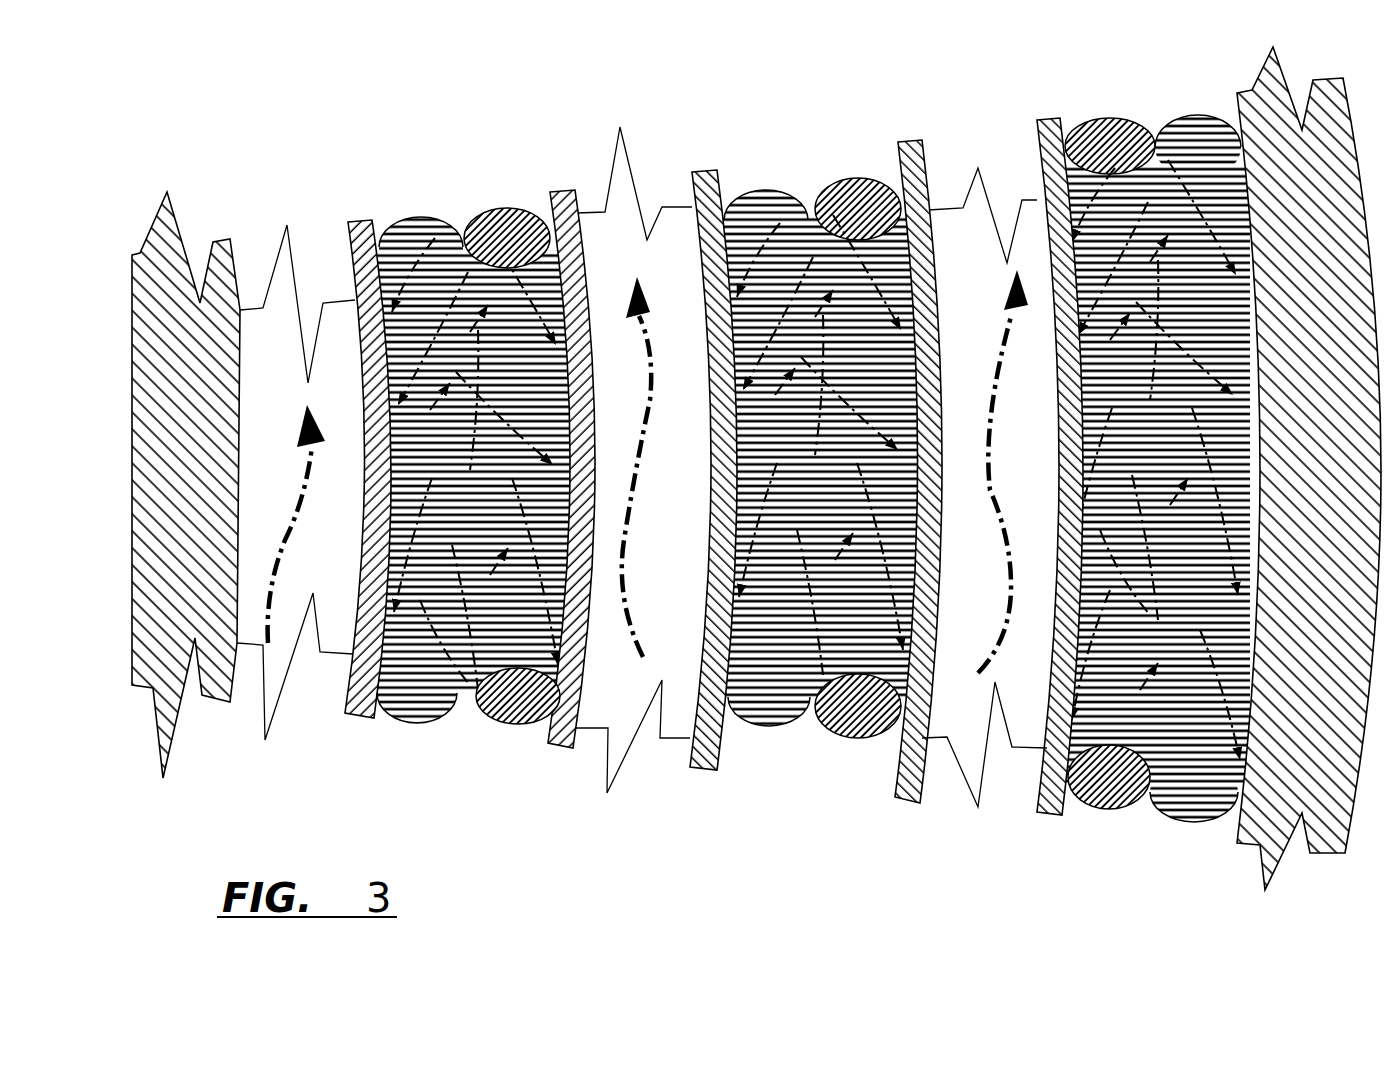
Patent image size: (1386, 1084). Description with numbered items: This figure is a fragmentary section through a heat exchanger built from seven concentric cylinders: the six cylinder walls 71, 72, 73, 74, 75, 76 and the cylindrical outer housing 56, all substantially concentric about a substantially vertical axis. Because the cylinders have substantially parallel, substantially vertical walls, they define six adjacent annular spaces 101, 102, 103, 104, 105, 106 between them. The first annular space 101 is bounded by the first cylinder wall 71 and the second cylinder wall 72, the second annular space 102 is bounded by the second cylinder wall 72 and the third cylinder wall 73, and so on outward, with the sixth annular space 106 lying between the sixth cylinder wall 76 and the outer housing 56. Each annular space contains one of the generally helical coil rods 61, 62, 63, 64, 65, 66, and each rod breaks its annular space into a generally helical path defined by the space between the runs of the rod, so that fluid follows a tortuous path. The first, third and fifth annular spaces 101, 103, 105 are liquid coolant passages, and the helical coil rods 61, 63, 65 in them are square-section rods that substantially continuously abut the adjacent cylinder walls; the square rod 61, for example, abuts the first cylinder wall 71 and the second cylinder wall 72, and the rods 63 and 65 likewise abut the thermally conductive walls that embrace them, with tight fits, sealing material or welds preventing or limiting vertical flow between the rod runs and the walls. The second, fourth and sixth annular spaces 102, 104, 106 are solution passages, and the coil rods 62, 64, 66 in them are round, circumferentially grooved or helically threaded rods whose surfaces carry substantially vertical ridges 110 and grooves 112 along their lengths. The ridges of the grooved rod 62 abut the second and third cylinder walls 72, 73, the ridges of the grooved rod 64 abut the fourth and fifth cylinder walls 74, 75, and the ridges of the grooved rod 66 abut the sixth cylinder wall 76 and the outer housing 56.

The cylindrical outer housing 56 is at (1247, 88).
The first generally helical coil rod 61 is at (260, 625).
The second generally helical coil rod 62 is at (447, 672).
The third generally helical coil rod 63 is at (622, 712).
The fourth generally helical coil rod 64 is at (782, 703).
The fifth generally helical coil rod 65 is at (953, 713).
The sixth generally helical coil rod 66 is at (1110, 803).
The first cylinder wall 71 is at (167, 250).
The second cylinder wall 72 is at (363, 233).
The third cylinder wall 73 is at (562, 190).
The fourth cylinder wall 74 is at (703, 178).
The fifth cylinder wall 75 is at (907, 153).
The sixth cylinder wall 76 is at (1048, 135).
The first annular space 101 is at (305, 685).
The second annular space 102 is at (466, 717).
The third annular space 103 is at (650, 748).
The fourth annular space 104 is at (810, 727).
The fifth annular space 105 is at (1005, 783).
The sixth annular space 106 is at (1148, 807).
The ridges 110 is at (420, 220).
The grooves 112 is at (450, 232).